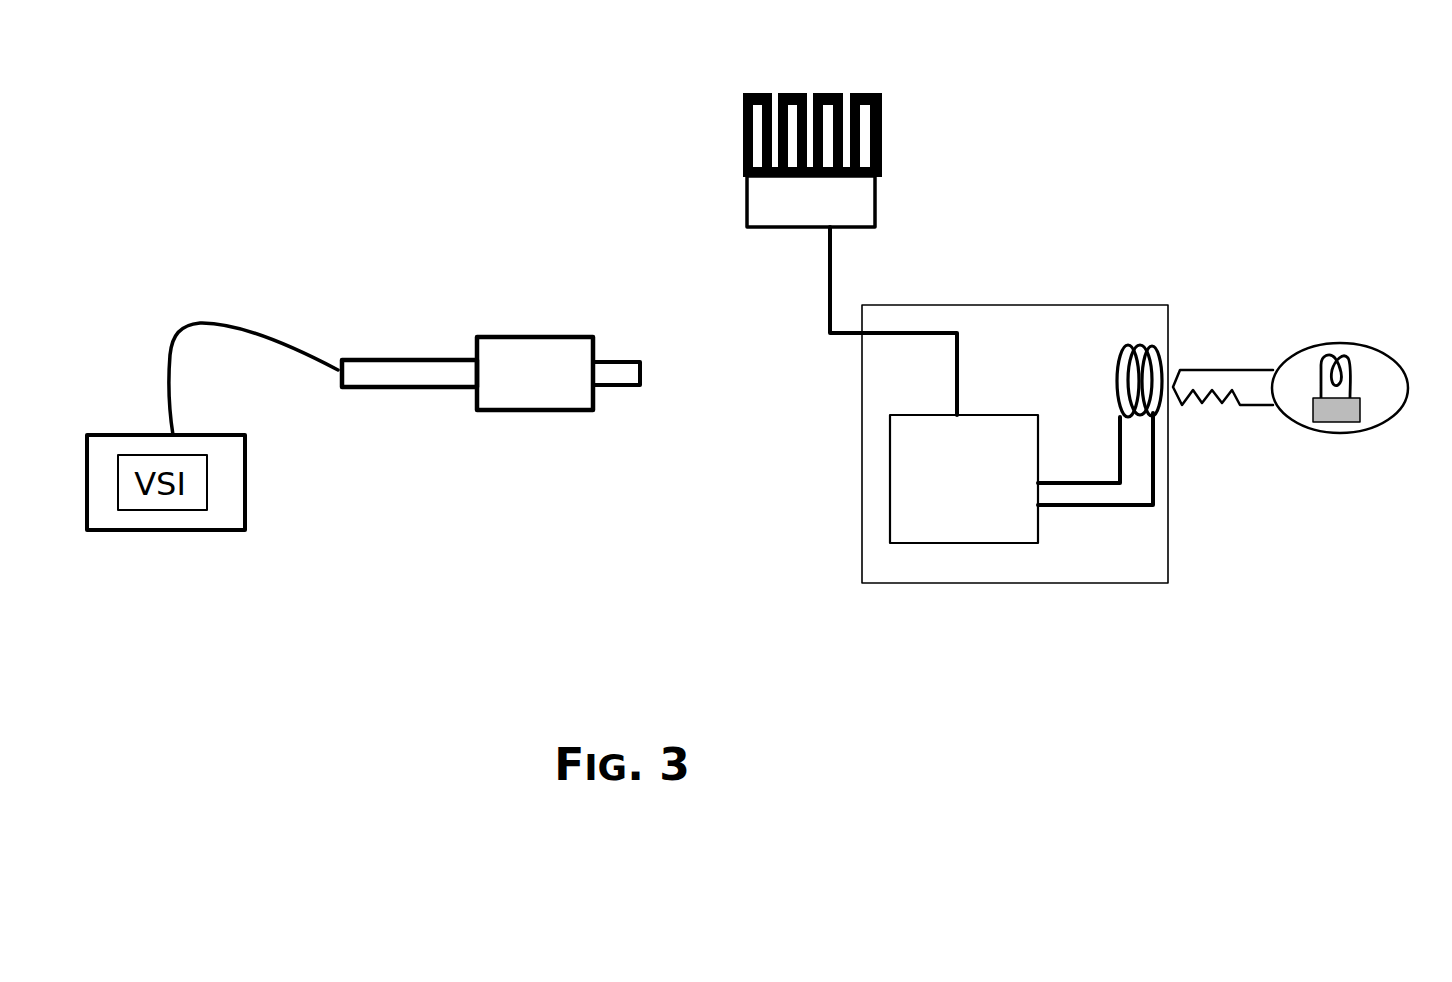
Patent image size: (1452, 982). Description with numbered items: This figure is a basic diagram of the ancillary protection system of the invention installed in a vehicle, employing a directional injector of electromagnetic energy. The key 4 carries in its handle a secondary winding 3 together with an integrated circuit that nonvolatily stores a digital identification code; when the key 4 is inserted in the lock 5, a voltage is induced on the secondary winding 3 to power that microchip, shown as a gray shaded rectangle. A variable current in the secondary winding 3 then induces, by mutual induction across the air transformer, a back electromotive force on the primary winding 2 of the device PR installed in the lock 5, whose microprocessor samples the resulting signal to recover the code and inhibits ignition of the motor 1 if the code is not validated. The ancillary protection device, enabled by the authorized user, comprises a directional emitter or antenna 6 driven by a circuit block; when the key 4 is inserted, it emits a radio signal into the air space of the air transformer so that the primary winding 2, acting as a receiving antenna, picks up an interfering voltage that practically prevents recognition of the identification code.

The motor 1 is at (737, 197).
The primary winding 2 is at (1105, 365).
The secondary winding 3 is at (1360, 375).
The key 4 is at (1268, 413).
The lock 5 is at (850, 435).
The directional emitter or antenna 6 is at (465, 400).